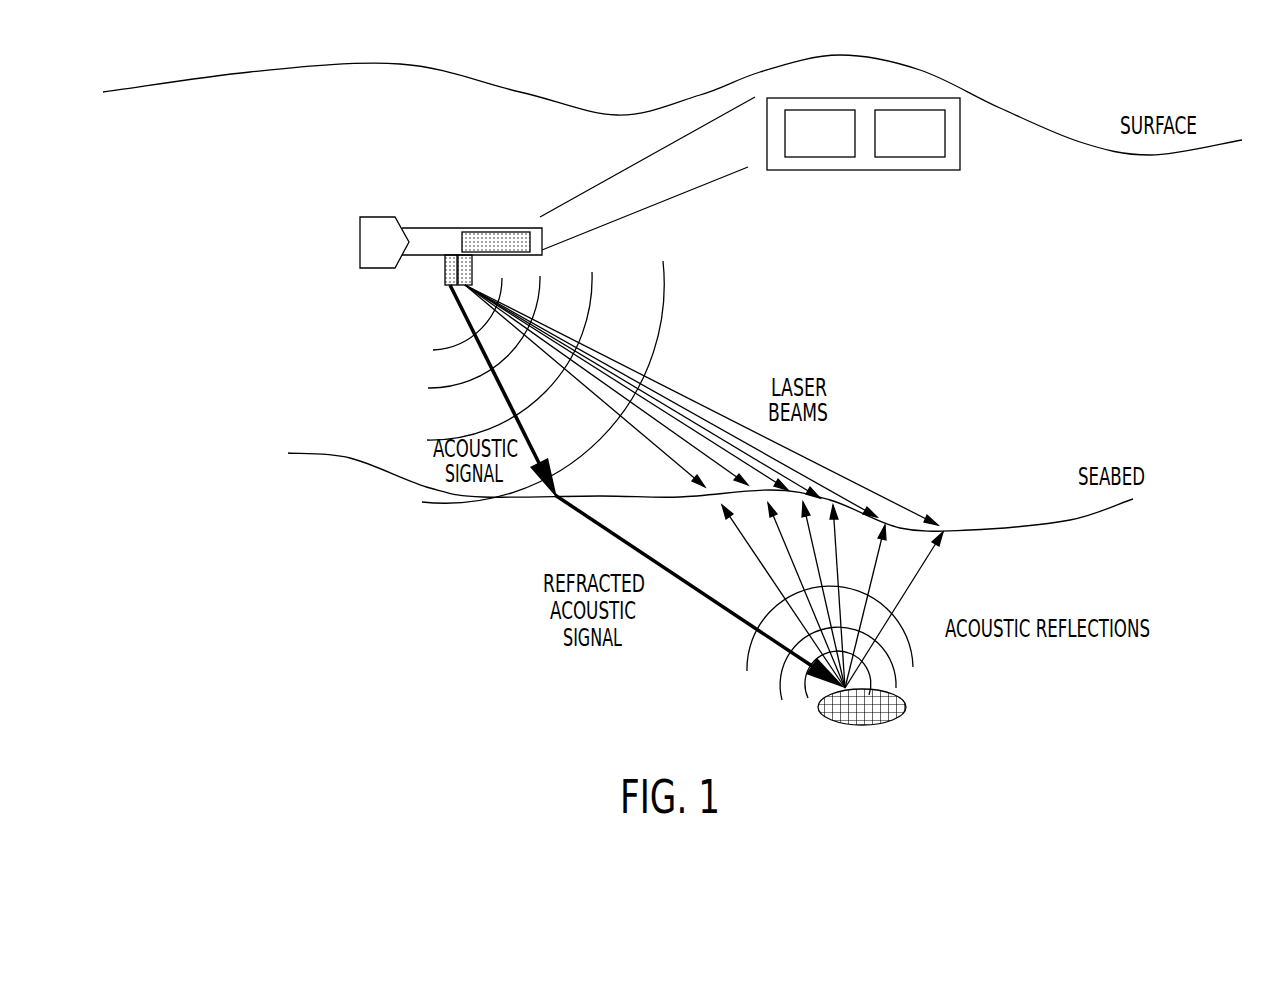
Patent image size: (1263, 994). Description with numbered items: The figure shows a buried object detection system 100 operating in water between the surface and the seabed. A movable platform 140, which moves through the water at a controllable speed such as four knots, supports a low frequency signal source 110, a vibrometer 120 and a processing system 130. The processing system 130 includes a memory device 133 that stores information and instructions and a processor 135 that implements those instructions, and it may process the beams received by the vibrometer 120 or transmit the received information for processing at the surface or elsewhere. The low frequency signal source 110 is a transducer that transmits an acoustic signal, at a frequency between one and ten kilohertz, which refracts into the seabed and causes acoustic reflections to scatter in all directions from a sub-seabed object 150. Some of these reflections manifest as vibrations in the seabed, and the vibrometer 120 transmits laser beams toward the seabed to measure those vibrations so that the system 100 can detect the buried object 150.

The buried object detection system 100 is at (288, 160).
The low frequency signal source 110 is at (445, 271).
The vibrometer 120 is at (528, 292).
The processing system 130 is at (478, 240).
The memory device 133 is at (800, 110).
The processor 135 is at (908, 110).
The movable platform 140 is at (437, 228).
The sub-seabed object 150 is at (905, 712).